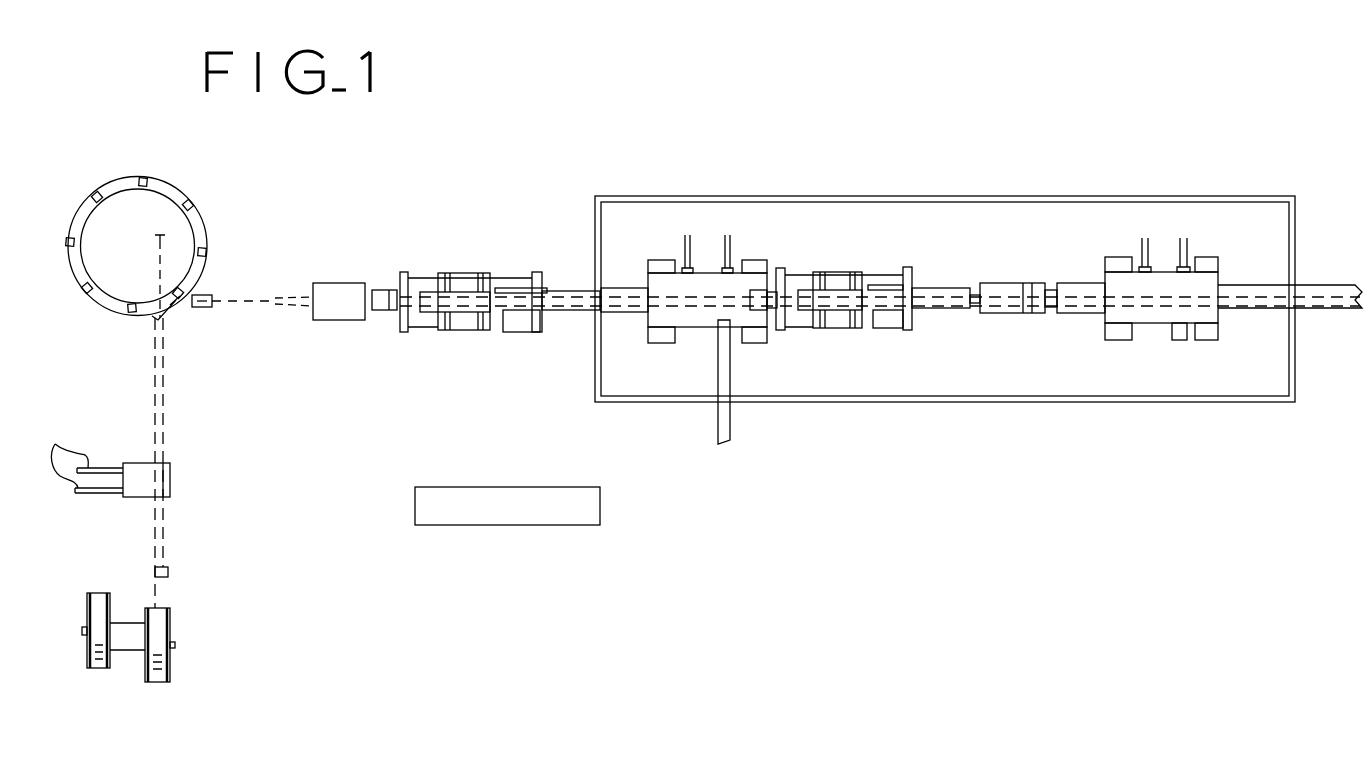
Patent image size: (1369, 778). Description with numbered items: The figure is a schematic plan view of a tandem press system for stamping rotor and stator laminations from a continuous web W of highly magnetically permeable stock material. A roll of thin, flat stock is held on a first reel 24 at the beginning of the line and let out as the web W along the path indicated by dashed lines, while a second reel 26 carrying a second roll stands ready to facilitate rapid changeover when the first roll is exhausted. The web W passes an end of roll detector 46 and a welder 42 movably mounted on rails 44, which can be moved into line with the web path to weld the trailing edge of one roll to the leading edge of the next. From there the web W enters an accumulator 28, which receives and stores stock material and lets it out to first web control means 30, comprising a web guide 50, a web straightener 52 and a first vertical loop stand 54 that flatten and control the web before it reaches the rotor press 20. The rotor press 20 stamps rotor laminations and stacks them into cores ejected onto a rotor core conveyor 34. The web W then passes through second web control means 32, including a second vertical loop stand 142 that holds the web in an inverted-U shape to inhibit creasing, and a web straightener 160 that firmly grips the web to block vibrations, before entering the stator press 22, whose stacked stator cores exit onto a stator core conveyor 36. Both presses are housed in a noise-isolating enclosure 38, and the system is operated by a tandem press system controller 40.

The rotor press 20 is at (707, 255).
The stator press 22 is at (1165, 257).
The first reel 24 is at (146, 672).
The second reel 26 is at (86, 655).
The accumulator 28 is at (124, 180).
The first web control means 30 is at (497, 239).
The second web control means 32 is at (873, 236).
The rotor core conveyor 34 is at (733, 417).
The stator core conveyor 36 is at (1327, 285).
The enclosure 38 is at (1065, 398).
The tandem press system controller 40 is at (538, 525).
The welder 42 is at (137, 463).
The rails 44 is at (65, 451).
The end of roll detector 46 is at (168, 572).
The web guide 50 is at (322, 283).
The web straightener 52 is at (393, 288).
The first vertical loop stand 54 is at (472, 256).
The second vertical loop stand 142 is at (843, 257).
The web straightener 160 is at (1003, 315).
The web W is at (165, 423).